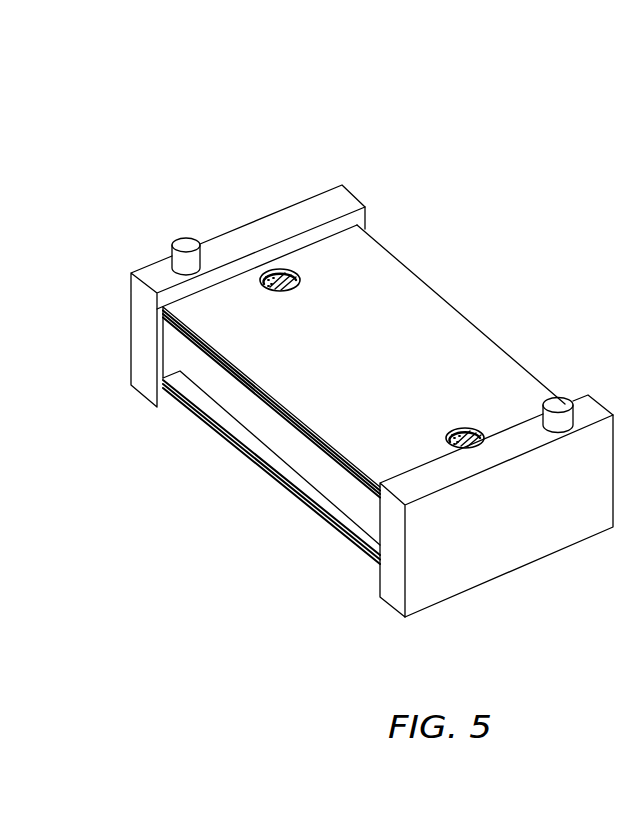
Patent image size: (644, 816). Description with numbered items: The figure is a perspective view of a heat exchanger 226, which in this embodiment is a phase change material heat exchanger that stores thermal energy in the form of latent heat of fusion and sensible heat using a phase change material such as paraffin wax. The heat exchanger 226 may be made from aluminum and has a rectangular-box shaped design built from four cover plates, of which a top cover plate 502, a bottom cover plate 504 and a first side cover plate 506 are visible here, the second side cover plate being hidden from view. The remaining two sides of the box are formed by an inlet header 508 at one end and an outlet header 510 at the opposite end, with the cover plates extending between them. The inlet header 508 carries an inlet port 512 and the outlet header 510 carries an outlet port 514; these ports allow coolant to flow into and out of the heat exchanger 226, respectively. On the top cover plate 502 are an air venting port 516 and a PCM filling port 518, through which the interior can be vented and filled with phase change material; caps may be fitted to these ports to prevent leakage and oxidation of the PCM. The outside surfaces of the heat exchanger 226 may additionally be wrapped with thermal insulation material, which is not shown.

The heat exchanger 226 is at (159, 122).
The top cover plate 502 is at (428, 317).
The bottom cover plate 504 is at (328, 530).
The first side cover plate 506 is at (250, 418).
The inlet header 508 is at (315, 193).
The outlet header 510 is at (545, 528).
The inlet port 512 is at (182, 243).
The outlet port 514 is at (562, 402).
The air venting port 516 is at (470, 428).
The PCM filling port 518 is at (283, 271).